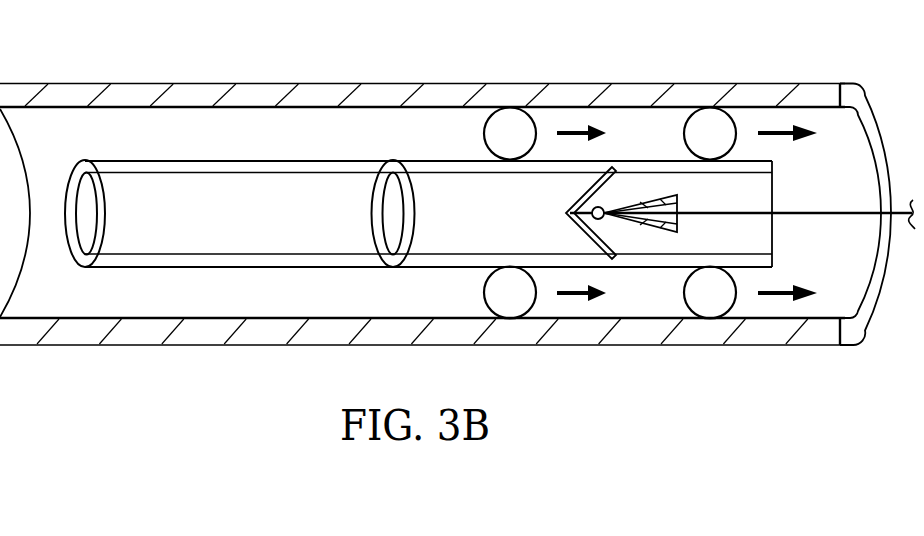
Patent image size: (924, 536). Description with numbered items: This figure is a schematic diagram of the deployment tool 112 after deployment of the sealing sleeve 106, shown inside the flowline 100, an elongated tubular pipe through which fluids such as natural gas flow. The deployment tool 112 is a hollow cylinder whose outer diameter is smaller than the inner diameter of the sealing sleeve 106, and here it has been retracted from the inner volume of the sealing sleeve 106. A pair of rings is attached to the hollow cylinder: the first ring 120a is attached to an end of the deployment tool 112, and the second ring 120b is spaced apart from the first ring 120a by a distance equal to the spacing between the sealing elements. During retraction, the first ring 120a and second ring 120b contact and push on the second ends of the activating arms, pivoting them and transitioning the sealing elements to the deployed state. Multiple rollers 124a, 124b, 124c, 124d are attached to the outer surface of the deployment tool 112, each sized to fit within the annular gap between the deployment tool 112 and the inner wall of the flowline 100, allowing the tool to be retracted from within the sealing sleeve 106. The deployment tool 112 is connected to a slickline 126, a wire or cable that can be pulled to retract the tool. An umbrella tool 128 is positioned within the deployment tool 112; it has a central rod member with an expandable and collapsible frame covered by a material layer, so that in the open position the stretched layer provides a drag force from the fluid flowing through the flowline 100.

The flowline 100 is at (816, 83).
The sealing sleeve 106 is at (248, 173).
The deployment tool 112 is at (457, 163).
The first ring 120a is at (107, 212).
The second ring 120b is at (372, 212).
The roller 124a is at (707, 117).
The roller 124b is at (509, 117).
The roller 124c is at (510, 307).
The roller 124d is at (710, 307).
The slickline 126 is at (811, 212).
The umbrella tool 128 is at (680, 220).